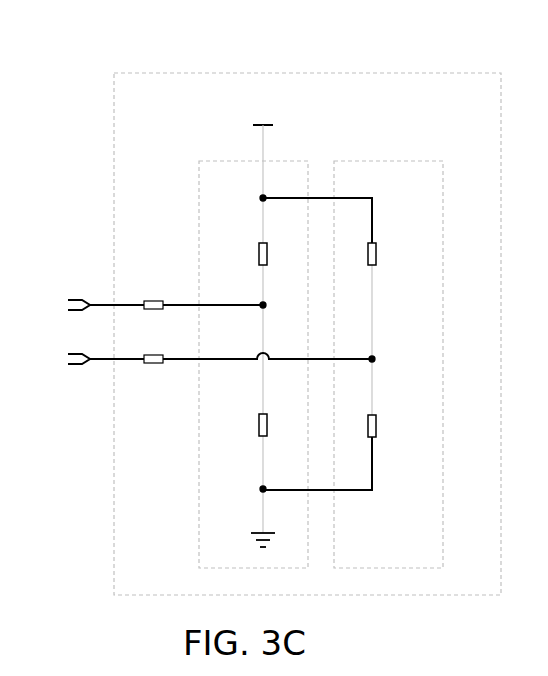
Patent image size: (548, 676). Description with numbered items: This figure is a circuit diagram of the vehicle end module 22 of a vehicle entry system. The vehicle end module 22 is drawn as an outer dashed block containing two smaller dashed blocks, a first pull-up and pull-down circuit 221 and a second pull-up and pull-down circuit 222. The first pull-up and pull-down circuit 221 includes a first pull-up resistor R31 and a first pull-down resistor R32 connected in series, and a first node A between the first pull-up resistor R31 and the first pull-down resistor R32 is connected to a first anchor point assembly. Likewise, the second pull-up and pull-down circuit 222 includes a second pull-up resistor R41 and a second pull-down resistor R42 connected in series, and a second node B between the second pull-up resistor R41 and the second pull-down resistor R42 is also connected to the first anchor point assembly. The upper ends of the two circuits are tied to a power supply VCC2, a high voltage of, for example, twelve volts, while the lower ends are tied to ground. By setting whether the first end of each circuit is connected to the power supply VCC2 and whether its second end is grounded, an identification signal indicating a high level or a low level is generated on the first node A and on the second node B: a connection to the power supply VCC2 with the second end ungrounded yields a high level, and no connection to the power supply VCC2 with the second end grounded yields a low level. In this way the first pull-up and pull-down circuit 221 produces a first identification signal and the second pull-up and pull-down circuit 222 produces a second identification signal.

The vehicle end module 22 is at (308, 73).
The first pull-up and pull-down circuit 221 is at (233, 161).
The second pull-up and pull-down circuit 222 is at (390, 161).
The power supply VCC2 is at (254, 110).
The first pull-up resistor R31 is at (237, 257).
The first pull-down resistor R32 is at (237, 428).
The second pull-up resistor R41 is at (398, 257).
The second pull-down resistor R42 is at (398, 429).
The first node A is at (143, 307).
The second node B is at (197, 360).